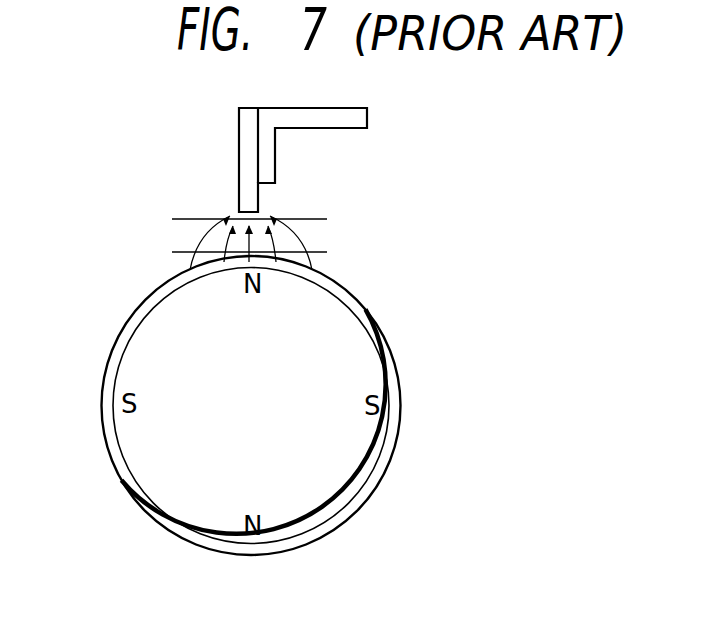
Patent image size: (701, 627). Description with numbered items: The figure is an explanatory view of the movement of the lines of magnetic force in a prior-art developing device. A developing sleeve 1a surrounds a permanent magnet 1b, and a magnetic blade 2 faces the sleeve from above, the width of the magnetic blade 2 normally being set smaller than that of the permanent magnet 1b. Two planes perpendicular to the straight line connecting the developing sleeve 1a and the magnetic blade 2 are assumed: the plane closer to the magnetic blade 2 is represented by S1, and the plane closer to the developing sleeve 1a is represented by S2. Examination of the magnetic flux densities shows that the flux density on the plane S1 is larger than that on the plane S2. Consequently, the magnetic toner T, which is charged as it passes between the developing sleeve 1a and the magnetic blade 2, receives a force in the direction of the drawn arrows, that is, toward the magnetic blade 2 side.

The developing sleeve 1a is at (107, 442).
The permanent magnet 1b is at (163, 484).
The magnetic blade 2 is at (239, 157).
The plane closer to the magnetic blade S1 is at (301, 219).
The plane closer to the developing sleeve S2 is at (323, 253).
The magnetic toner T is at (311, 265).